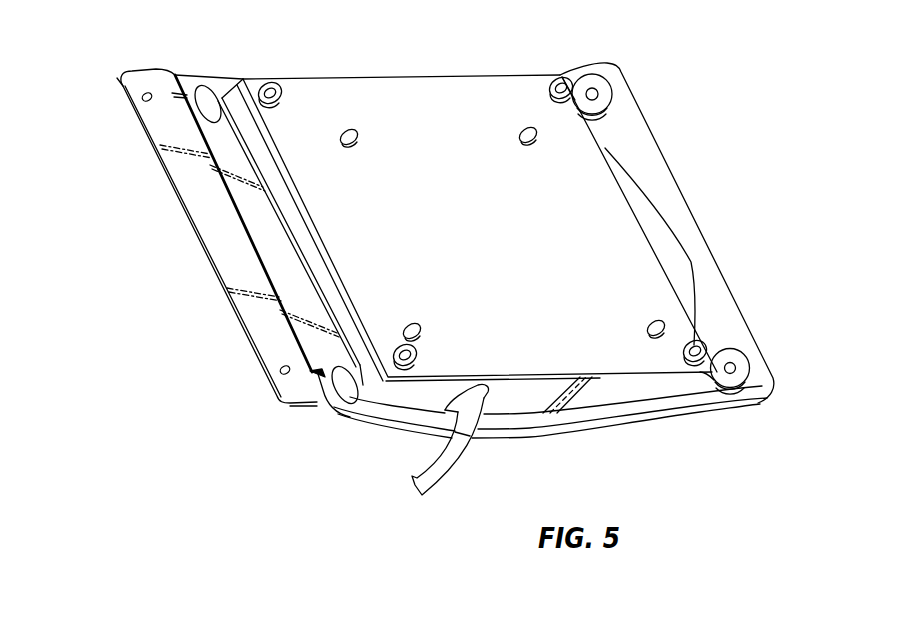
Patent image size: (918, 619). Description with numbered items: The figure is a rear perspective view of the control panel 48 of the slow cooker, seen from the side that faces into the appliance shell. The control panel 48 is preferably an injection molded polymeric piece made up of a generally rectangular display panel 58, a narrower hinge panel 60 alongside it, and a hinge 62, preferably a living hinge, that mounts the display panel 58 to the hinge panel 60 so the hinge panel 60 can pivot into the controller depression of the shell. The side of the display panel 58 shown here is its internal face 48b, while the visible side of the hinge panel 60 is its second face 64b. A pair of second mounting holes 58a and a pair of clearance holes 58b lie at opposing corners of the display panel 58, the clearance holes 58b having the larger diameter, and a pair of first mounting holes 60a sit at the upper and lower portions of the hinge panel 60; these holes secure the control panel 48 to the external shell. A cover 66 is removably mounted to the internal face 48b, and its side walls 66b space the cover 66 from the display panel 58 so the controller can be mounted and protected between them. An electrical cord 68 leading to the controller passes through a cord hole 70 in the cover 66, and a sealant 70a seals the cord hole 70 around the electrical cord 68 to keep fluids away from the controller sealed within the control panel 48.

The control panel 48 is at (667, 233).
The internal face 48b is at (812, 314).
The display panel 58 is at (648, 108).
The second mounting hole 58a is at (594, 93).
The clearance hole 58b is at (212, 96).
The hinge panel 60 is at (225, 268).
The first mounting hole 60a is at (143, 100).
The hinge 62 is at (287, 308).
The second face 64b is at (182, 183).
The cover 66 is at (445, 92).
The side walls 66b is at (615, 397).
The electrical cord 68 is at (463, 458).
The cord hole 70 is at (484, 390).
The sealant 70a is at (455, 432).